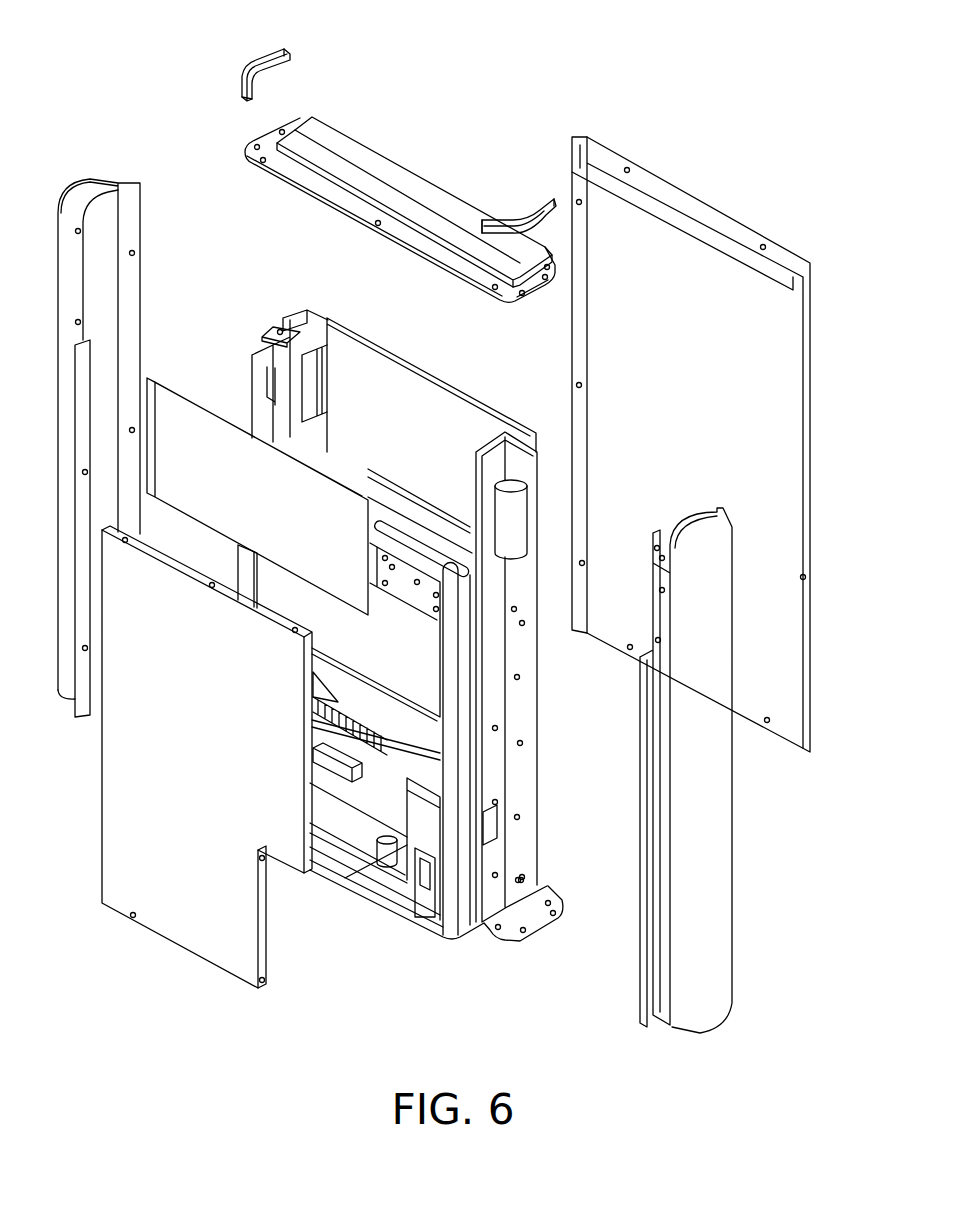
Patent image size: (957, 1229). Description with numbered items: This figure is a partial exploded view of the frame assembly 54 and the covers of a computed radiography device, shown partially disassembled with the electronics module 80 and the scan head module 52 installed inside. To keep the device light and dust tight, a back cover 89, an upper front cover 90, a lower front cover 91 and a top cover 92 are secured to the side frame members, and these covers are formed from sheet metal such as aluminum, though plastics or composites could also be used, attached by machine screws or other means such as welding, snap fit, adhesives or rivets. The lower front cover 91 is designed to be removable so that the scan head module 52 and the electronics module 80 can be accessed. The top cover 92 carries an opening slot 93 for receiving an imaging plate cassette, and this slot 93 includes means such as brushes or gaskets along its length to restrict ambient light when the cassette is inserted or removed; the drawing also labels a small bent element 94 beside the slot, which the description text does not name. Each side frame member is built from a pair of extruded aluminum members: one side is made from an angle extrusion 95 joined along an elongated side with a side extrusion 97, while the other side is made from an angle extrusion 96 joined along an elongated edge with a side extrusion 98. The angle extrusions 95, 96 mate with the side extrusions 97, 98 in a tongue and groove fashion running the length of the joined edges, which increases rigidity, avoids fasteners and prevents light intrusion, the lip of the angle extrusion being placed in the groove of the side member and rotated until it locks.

The scan head module 52 is at (411, 666).
The frame assembly 54 is at (493, 966).
The electronics module 80 is at (352, 848).
The back cover 89 is at (795, 363).
The upper front cover 90 is at (276, 506).
The lower front cover 91 is at (168, 922).
The top cover 92 is at (357, 208).
The opening slot 93 is at (388, 208).
The bent tube 94 is at (263, 57).
The angle extrusion 95 is at (510, 707).
The angle extrusion 96 is at (302, 315).
The side extrusion 97 is at (720, 856).
The side extrusion 98 is at (87, 178).